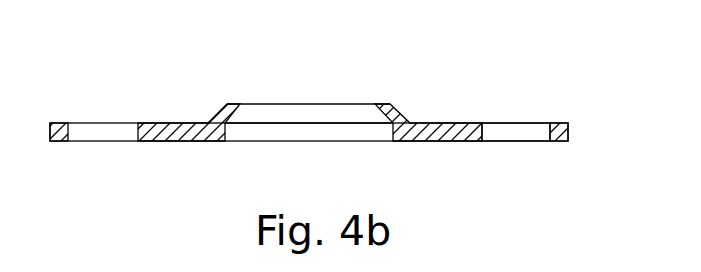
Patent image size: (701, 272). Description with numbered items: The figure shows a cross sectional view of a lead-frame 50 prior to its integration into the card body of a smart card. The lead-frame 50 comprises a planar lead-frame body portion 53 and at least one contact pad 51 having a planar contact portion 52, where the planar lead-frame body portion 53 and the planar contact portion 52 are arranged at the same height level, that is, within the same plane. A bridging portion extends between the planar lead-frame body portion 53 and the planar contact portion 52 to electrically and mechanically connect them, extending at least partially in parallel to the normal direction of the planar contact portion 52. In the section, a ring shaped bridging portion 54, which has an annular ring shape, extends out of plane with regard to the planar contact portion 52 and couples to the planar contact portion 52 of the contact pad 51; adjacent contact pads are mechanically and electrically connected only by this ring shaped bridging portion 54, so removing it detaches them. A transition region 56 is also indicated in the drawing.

The lead-frame 50 is at (313, 114).
The contact pad 51 is at (441, 110).
The planar contact portion 52 is at (475, 123).
The planar lead-frame body portion 53 is at (558, 142).
The ring shaped bridging portion 54 is at (213, 118).
The transition corner 56 is at (392, 133).